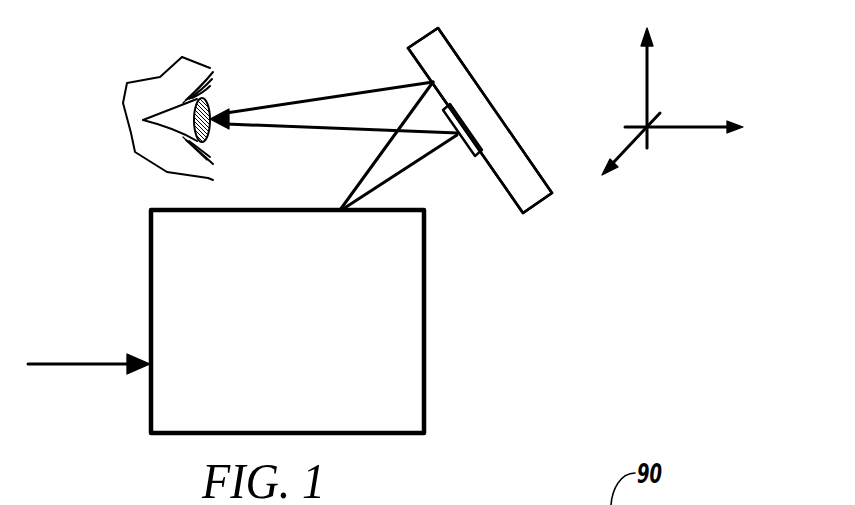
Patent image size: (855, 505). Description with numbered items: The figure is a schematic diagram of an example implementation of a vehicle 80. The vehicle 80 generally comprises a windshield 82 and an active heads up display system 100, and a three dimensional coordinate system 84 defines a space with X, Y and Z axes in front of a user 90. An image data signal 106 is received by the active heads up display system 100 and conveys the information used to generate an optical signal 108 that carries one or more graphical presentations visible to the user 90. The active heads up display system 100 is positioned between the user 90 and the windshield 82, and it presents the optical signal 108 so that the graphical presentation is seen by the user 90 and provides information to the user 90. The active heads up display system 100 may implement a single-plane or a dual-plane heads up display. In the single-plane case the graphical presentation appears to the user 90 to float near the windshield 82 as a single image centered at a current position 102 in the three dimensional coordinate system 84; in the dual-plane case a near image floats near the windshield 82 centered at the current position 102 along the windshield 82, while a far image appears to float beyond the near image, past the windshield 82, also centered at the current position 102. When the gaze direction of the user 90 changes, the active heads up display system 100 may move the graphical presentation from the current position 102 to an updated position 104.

The vehicle 80 is at (278, 58).
The windshield 82 is at (537, 204).
The three dimensional coordinate system 84 is at (648, 83).
The user 90 is at (170, 104).
The active heads up display system 100 is at (150, 282).
The current position 102 is at (473, 128).
The updated position 104 is at (436, 82).
The image data signal 106 is at (85, 362).
The optical signal 108 is at (338, 131).